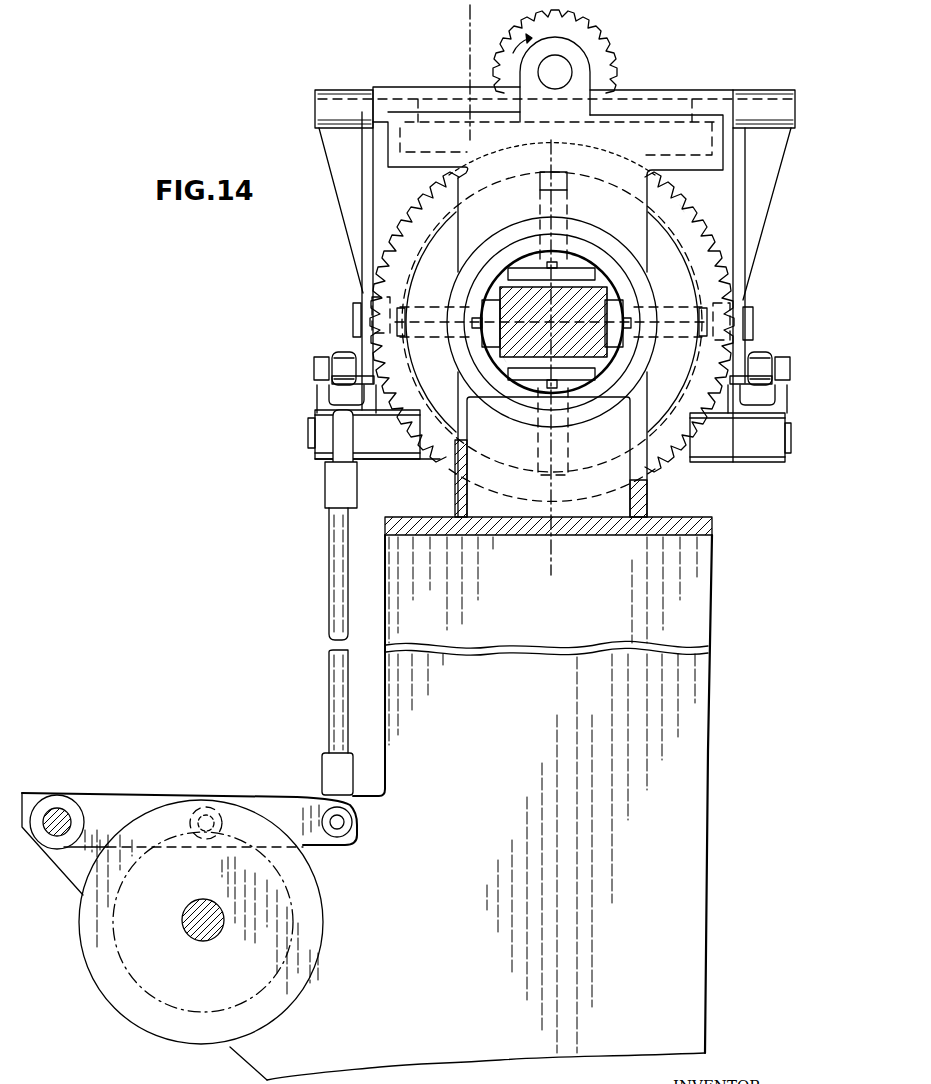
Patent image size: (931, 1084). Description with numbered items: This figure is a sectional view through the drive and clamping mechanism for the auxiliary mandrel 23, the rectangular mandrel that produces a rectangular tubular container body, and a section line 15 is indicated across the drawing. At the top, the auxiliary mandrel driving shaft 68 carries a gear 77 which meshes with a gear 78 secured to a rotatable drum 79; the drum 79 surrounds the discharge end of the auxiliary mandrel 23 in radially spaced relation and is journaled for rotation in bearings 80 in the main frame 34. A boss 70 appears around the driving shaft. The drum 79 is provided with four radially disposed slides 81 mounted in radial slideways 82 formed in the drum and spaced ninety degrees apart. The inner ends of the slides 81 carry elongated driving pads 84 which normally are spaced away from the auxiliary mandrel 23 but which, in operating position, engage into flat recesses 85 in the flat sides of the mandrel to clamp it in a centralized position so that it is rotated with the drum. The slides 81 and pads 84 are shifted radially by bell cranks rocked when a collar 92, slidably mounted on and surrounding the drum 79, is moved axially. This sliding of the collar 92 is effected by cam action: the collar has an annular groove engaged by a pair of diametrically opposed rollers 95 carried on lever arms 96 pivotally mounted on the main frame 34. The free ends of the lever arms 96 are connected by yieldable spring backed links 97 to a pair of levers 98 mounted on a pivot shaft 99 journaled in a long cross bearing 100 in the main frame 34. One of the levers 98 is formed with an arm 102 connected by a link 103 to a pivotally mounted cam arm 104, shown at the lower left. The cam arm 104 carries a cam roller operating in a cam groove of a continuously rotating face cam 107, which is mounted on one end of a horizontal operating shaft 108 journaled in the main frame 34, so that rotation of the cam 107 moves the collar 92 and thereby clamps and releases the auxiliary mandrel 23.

The section line 15- 15 is at (485, 15).
The gear 77 is at (600, 38).
The gear boss 70 is at (589, 58).
The auxiliary mandrel driving shaft 68 is at (572, 73).
The lever arms 96 is at (338, 197).
The gear 78 is at (426, 205).
The rotatable drum 79 is at (427, 275).
The collar 92 is at (687, 225).
The bearings 80 is at (617, 243).
The auxiliary mandrel 23 is at (593, 302).
The driving pads 84 is at (517, 268).
The radial slideways 82 is at (676, 304).
The slides 81 is at (568, 200).
The flat recesses 85 is at (500, 352).
The rollers 95 is at (360, 295).
The spring backed links 97 is at (325, 350).
The levers 98 is at (318, 400).
The pivot shaft 99 is at (316, 436).
The cross bearing 100 is at (392, 458).
The arm 102 is at (345, 440).
The link 103 is at (338, 655).
The main frame 34 is at (697, 564).
The cam arm 104 is at (293, 808).
The face cam 107 is at (128, 1010).
The operating shaft 108 is at (213, 936).